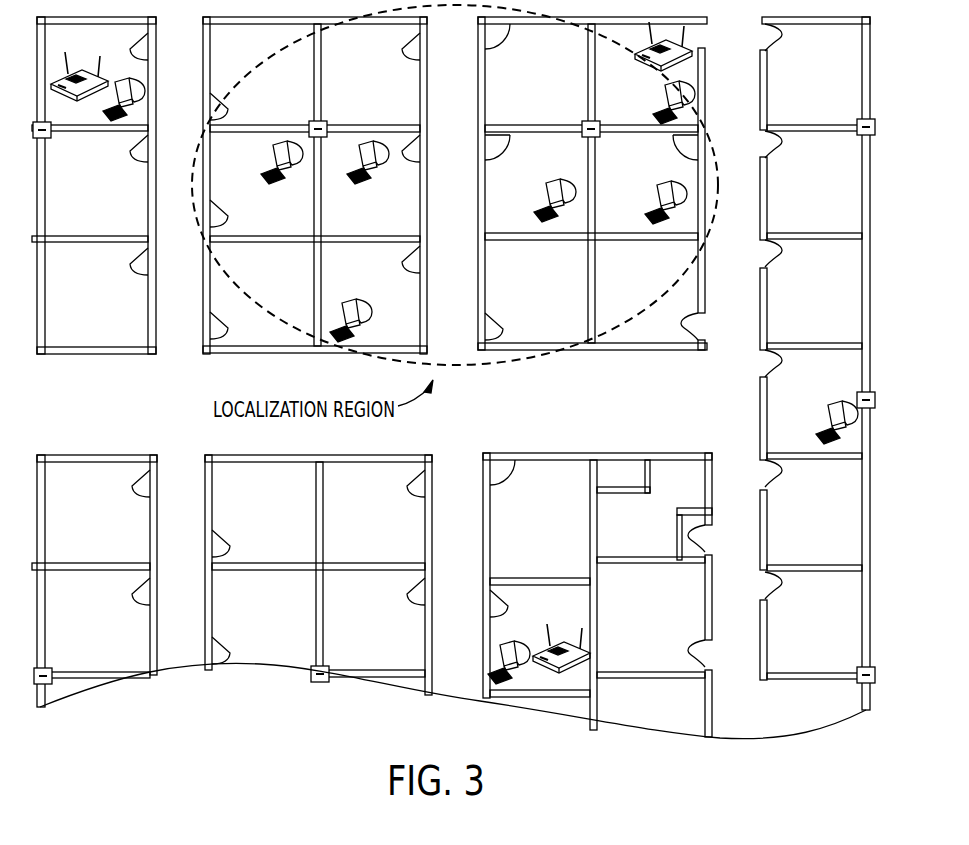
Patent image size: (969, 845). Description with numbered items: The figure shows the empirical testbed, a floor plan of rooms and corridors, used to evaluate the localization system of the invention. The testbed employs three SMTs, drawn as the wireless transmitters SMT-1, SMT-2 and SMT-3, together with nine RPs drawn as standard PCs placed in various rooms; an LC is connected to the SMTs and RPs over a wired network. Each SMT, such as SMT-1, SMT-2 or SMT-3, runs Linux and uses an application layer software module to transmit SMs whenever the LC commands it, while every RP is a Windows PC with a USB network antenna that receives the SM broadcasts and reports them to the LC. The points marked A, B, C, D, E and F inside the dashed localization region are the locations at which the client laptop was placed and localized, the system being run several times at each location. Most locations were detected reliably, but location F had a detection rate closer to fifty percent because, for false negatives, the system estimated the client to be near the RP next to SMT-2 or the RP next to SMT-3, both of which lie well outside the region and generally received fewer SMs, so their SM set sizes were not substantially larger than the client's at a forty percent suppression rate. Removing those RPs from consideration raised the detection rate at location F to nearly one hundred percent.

The SMT SMT-1 is at (695, 73).
The SMT SMT-2 is at (579, 654).
The SMT SMT-3 is at (98, 75).
The client location A is at (618, 95).
The client location B is at (368, 180).
The client location C is at (539, 200).
The client location D is at (653, 202).
The client location E is at (366, 320).
The client location F is at (282, 180).